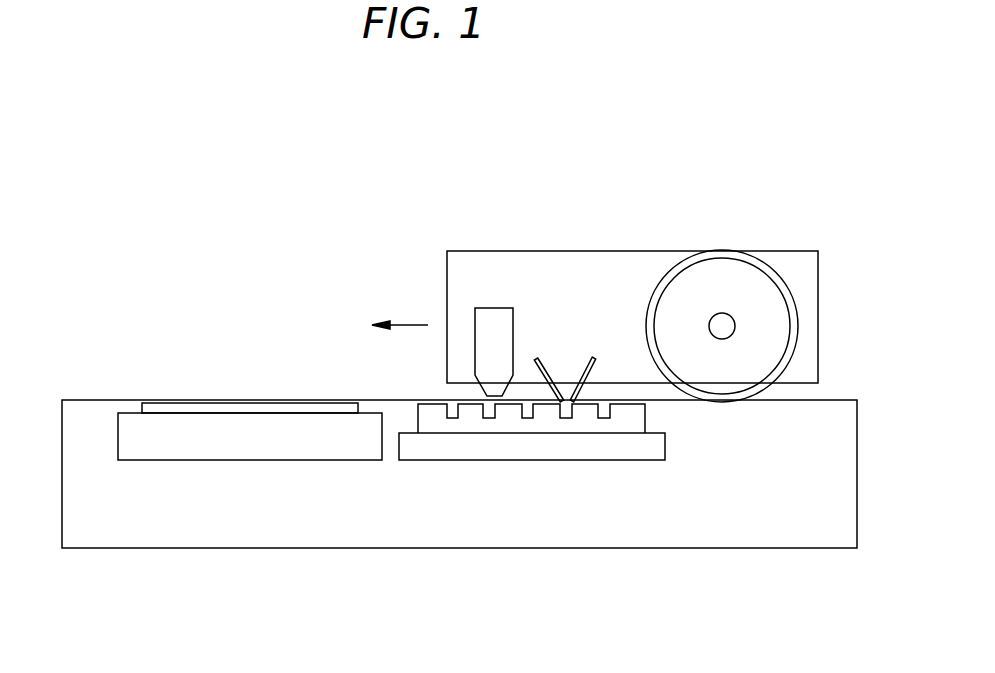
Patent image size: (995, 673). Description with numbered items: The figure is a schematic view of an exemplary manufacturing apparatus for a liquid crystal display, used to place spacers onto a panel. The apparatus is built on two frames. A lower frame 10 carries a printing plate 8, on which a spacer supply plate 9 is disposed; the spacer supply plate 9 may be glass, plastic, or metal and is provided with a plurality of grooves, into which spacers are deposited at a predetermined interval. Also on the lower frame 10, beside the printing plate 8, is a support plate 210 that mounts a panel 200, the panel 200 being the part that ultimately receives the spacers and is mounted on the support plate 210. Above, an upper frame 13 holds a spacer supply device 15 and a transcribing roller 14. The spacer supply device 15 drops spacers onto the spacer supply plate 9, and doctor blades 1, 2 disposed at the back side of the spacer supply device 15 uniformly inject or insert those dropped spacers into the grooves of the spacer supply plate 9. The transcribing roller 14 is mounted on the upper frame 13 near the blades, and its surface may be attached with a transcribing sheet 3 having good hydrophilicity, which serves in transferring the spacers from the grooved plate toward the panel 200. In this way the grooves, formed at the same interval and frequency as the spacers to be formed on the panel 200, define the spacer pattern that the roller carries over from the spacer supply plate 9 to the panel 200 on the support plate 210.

The doctor blade 1 is at (544, 358).
The doctor blade 2 is at (590, 357).
The transcribing sheet 3 is at (800, 325).
The printing plate 8 is at (467, 461).
The spacer supply plate 9 is at (585, 418).
The lower frame 10 is at (837, 473).
The upper frame 13 is at (598, 262).
The transcribing roller 14 is at (730, 273).
The spacer supply device 15 is at (490, 320).
The panel 200 is at (250, 401).
The support plate 210 is at (250, 461).